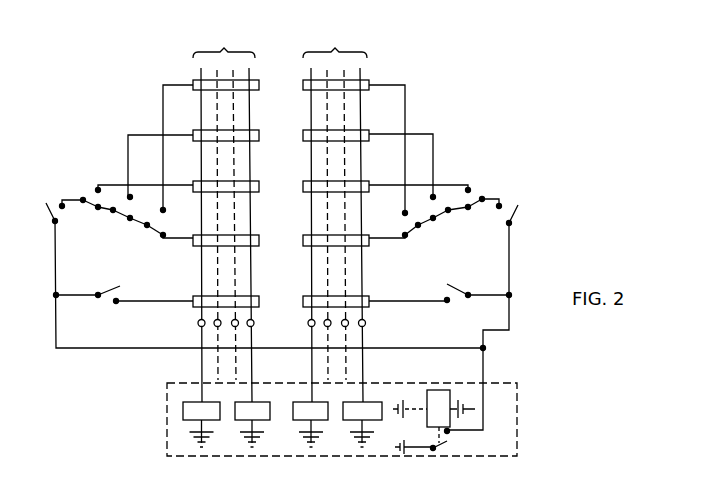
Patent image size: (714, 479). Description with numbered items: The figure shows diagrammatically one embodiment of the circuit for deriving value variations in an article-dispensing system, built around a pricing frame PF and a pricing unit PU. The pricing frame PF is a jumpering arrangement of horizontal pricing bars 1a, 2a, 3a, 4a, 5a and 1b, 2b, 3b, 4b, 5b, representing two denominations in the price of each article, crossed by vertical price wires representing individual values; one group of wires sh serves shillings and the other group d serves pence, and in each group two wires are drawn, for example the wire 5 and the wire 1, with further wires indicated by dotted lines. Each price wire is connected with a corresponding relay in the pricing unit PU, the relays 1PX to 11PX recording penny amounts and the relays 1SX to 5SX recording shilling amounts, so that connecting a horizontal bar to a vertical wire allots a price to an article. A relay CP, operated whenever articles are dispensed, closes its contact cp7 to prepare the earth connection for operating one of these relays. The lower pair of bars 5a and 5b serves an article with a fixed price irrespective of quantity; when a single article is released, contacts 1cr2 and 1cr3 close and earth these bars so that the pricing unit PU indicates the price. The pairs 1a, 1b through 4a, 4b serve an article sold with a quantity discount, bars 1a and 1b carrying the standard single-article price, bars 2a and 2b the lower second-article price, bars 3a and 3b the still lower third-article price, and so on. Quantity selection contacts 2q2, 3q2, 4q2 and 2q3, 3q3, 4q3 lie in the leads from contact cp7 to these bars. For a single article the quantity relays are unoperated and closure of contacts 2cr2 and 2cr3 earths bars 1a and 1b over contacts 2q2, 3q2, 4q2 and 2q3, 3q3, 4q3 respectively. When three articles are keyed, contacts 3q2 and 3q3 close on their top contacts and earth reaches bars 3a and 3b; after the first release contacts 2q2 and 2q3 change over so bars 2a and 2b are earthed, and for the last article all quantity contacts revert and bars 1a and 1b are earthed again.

The pricing frame PF is at (357, 34).
The shunt winding sh is at (224, 217).
The direct winding d is at (335, 217).
The price wire of value five 5 is at (201, 190).
The price wire of value one 1 is at (281, 190).
The pricing bar 4b is at (211, 145).
The pricing bar 3b is at (193, 163).
The pricing bar 2b is at (178, 197).
The pricing bar 1b is at (211, 251).
The pricing bar 5b is at (187, 312).
The pricing bar 4a is at (354, 146).
The pricing bar 3a is at (368, 163).
The pricing bar 2a is at (385, 197).
The pricing bar 1a is at (354, 251).
The pricing bar 5a is at (375, 312).
The contact of relay 2CR 2cr3 is at (64, 212).
The contact of quantity relay 2Q 2q3 is at (89, 197).
The contact of quantity relay 3Q 3q3 is at (129, 210).
The contact of quantity relay 4Q 4q3 is at (160, 223).
The contact of relay 1CR 1cr3 is at (101, 295).
The contact of relay 2CR 2cr2 is at (496, 212).
The contact of quantity relay 2Q 2q2 is at (472, 197).
The contact of quantity relay 3Q 3q2 is at (431, 210).
The contact of quantity relay 4Q 4q2 is at (404, 224).
The contact of relay 1CR 1cr2 is at (464, 293).
The pricing unit PU is at (324, 419).
The shilling relay 5SX is at (195, 417).
The shilling relay 1SX is at (248, 417).
The penny relay 11PX is at (302, 417).
The penny relay 1PX is at (359, 417).
The relay CP is at (434, 414).
The contact of relay CP cp7 is at (433, 446).